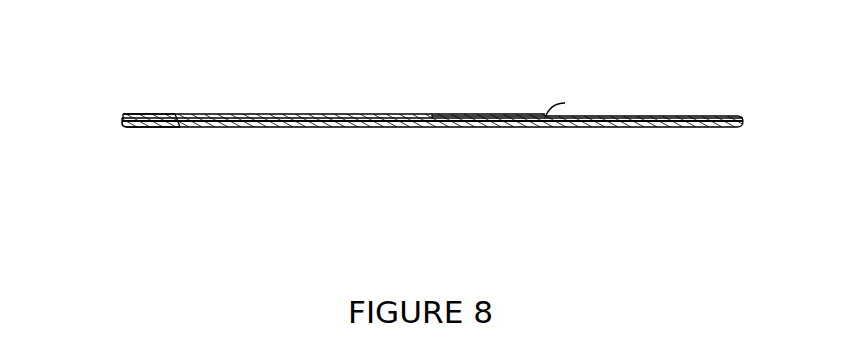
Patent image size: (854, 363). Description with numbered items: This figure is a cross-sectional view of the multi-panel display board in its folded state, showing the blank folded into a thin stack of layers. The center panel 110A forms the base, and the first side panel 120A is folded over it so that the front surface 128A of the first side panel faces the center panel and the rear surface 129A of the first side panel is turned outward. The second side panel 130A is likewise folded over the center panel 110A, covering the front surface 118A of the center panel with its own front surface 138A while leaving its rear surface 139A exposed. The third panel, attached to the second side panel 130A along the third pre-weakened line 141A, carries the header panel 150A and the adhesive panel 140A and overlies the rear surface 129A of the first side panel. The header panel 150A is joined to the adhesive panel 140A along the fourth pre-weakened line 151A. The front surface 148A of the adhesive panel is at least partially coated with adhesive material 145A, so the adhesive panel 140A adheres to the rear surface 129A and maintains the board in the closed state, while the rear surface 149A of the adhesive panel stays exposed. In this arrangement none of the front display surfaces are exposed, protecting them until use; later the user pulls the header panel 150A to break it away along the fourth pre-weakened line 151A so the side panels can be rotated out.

The center panel 110A is at (510, 127).
The front surface of the center panel 118A is at (565, 103).
The first side panel 120A is at (297, 127).
The front surface of the first side panel 128A is at (393, 126).
The rear surface of the first side panel 129A is at (305, 115).
The second side panel 130A is at (613, 117).
The front surface of the second side panel 138A is at (496, 127).
The rear surface of the second side panel 139A is at (670, 117).
The adhesive panel 140A is at (158, 113).
The third pre-weakened line 141A is at (435, 115).
The adhesive material 145A is at (178, 127).
The front surface of the adhesive panel 148A is at (145, 126).
The rear surface of the adhesive panel 149A is at (131, 112).
The header panel 150A is at (353, 115).
The fourth pre-weakened line 151A is at (175, 115).